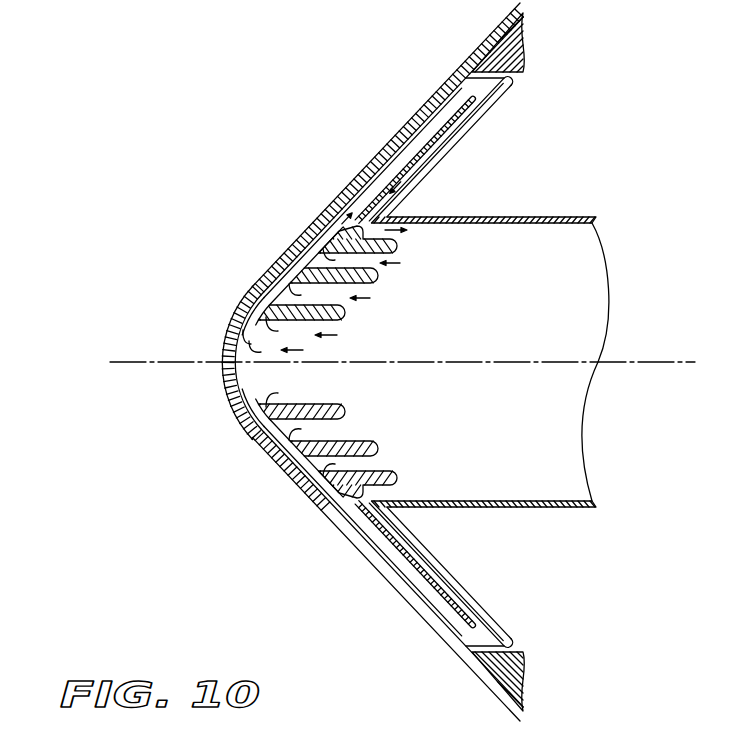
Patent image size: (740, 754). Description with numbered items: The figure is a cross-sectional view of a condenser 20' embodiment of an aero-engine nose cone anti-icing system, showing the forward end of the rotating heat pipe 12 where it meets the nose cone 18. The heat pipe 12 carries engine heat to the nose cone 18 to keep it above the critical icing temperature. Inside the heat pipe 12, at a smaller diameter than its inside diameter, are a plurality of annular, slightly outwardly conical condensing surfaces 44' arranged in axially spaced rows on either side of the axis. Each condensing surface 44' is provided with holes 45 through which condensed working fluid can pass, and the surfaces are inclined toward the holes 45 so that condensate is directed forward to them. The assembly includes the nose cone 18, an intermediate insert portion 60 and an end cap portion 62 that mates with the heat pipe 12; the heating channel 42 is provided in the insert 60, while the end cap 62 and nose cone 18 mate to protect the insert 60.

The heat pipe 12 is at (586, 216).
The nose cone 18 is at (274, 248).
The condenser 20' is at (387, 575).
The primary heating channel 42 is at (403, 161).
The condensing surfaces 44' is at (352, 362).
The holes 45 is at (272, 302).
The insert portion 60 is at (434, 143).
The end cap portion 62 is at (422, 181).